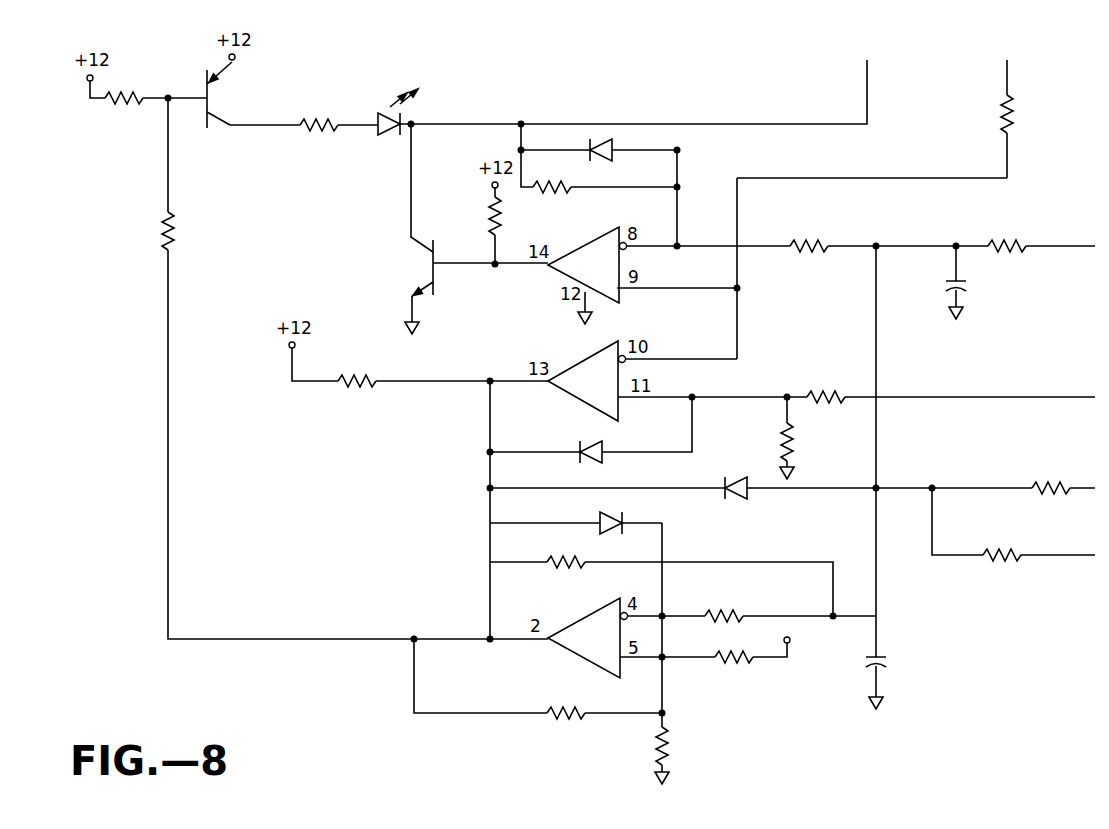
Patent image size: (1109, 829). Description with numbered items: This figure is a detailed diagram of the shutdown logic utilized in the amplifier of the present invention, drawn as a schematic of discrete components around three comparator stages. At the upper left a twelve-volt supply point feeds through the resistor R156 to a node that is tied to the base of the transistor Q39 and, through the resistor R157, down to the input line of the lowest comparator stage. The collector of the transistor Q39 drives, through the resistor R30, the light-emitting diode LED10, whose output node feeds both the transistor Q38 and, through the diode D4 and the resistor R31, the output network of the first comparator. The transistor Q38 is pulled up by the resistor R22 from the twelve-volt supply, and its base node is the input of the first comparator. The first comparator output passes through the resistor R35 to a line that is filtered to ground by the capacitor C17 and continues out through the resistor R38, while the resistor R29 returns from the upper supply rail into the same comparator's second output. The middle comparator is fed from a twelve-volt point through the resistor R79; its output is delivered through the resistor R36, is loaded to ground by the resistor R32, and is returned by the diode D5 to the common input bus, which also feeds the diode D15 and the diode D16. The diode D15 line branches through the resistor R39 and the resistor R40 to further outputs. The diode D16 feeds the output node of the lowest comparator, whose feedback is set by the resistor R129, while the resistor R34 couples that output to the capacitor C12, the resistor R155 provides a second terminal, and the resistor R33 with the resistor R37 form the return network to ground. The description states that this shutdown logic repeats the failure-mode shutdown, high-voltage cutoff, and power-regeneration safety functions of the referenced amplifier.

The resistor R156 5.1K R156 is at (129, 97).
The resistor R157 10K R157 is at (146, 228).
The transistor Q39 is at (228, 95).
The resistor R30 1K R30 is at (319, 123).
The light emitting diode LED 10 LED10 is at (401, 99).
The transistor Q38 is at (410, 287).
The resistor R22 36K R22 is at (475, 217).
The resistor R31 100K R31 is at (551, 188).
The diode D4 is at (615, 155).
The resistor R35 is at (809, 236).
The resistor R29 10K R29 is at (986, 112).
The resistor R38 10K R38 is at (1005, 244).
The capacitor C17 .01 C17 is at (976, 297).
The resistor R79 10K R79 is at (357, 383).
The resistor R36 100K R36 is at (829, 396).
The resistor R32 10K R32 is at (805, 451).
The diode D5 is at (603, 457).
The diode D15 is at (738, 477).
The diode D16 is at (611, 513).
The resistor R39 10K R39 is at (1052, 481).
The resistor R40 10K R40 is at (1003, 554).
The resistor R129 3.3M R129 is at (565, 562).
The resistor R34 36K R34 is at (724, 610).
The resistor R155 100K R155 is at (736, 658).
The capacitor C12 0.1 C12 is at (898, 676).
The resistor R33 100K R33 is at (565, 713).
The resistor R37 100K R37 is at (685, 754).